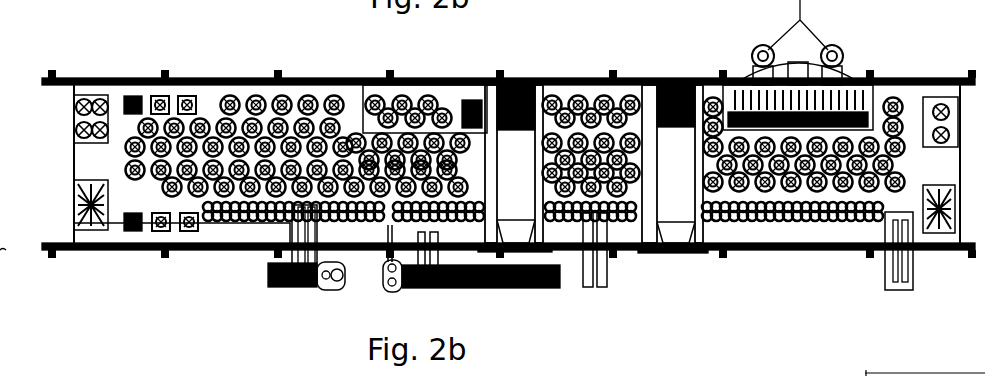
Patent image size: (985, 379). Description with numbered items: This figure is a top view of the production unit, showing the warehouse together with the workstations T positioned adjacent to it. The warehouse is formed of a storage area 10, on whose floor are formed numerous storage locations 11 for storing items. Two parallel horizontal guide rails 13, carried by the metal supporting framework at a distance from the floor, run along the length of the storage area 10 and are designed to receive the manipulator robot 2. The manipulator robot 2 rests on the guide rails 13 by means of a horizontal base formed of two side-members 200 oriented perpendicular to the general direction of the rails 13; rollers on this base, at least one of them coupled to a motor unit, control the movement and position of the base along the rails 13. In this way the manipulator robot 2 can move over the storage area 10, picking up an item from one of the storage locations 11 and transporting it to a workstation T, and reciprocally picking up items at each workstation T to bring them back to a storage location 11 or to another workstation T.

The manipulator robot 2 is at (518, 80).
The storage location 11 is at (568, 97).
The horizontal guide rail 13 is at (883, 80).
The storage area 10 is at (918, 97).
The side-member 200 is at (662, 252).
The workstation T is at (300, 290).